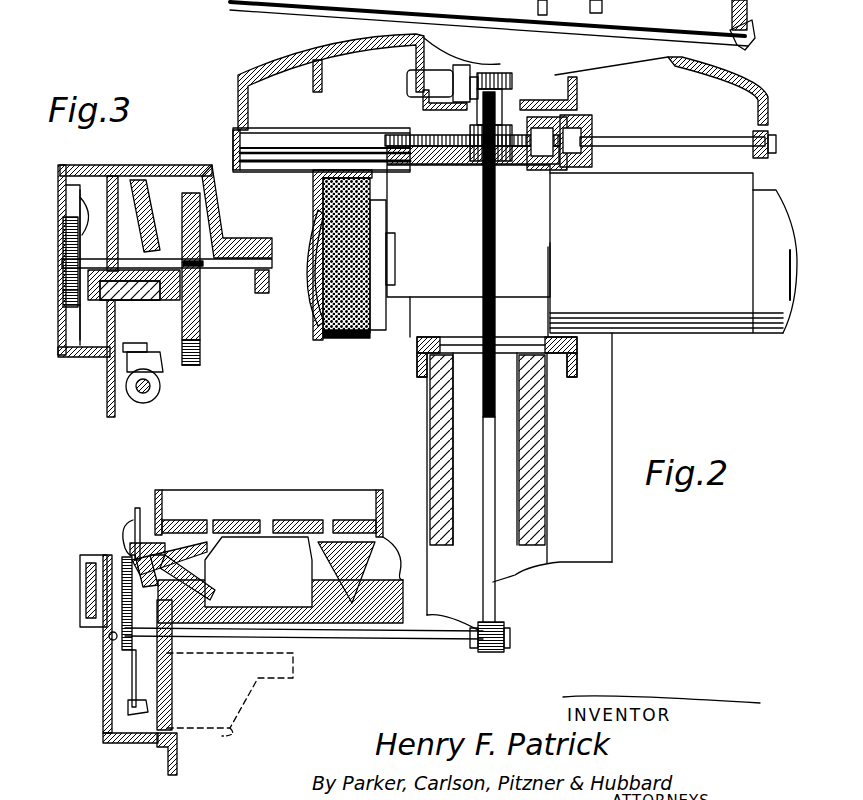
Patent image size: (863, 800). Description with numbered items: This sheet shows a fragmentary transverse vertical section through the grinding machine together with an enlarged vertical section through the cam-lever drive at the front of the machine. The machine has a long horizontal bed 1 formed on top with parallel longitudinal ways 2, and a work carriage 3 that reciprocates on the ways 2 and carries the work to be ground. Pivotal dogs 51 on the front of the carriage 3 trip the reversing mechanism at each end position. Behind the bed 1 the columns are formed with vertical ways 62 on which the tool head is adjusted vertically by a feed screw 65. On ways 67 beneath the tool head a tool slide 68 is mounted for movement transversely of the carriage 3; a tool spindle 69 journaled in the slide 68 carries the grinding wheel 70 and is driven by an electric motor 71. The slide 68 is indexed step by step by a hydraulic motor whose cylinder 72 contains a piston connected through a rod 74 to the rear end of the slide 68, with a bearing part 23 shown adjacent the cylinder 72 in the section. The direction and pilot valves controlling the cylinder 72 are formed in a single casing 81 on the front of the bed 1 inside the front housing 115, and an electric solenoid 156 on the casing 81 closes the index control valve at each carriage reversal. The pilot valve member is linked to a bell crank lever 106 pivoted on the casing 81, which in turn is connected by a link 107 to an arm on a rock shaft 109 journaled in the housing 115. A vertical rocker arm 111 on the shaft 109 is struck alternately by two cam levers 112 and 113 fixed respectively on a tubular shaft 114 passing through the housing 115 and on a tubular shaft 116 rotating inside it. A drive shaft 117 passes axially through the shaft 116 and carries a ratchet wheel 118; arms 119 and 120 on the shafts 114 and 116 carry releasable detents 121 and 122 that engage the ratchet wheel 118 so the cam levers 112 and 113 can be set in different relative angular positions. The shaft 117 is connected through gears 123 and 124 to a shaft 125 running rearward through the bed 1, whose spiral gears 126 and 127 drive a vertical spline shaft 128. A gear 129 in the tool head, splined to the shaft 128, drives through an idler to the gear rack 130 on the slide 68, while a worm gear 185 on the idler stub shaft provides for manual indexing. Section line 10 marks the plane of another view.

In FIG. 2, the bed 1 is at (168, 765).
In FIG. 2, the ways 2 is at (213, 583).
In FIG. 2, the work carriage 3 is at (293, 523).
In FIG. 2, the section line 10 is at (347, 62).
In FIG. 2, the bearing block 23 is at (546, 130).
In FIG. 2, the pivotal dogs 51 is at (133, 540).
In FIG. 2, the vertical way 62 is at (544, 423).
In FIG. 2, the feed screw 65 is at (470, 80).
In FIG. 2, the ways 67 is at (279, 163).
In FIG. 2, the tool slide 68 is at (645, 188).
In FIG. 2, the tool spindle 69 is at (390, 257).
In FIG. 2, the grinding wheel 70 is at (336, 338).
In FIG. 2, the electric motor 71 is at (786, 325).
In FIG. 2, the cylinder 72 is at (576, 117).
In FIG. 2, the rod 74 is at (634, 138).
In FIG. 2, the casing 81 is at (222, 732).
In FIG. 2, the bell crank lever 106 is at (150, 708).
In FIG. 2, the link 107 is at (133, 672).
In FIG. 3, the rock shaft 109 is at (160, 388).
In FIG. 3, the rocker arm 111 is at (125, 366).
In FIG. 2, the rocker arm 111 is at (110, 637).
In FIG. 3, the cam lever 112 is at (148, 182).
In FIG. 2, the cam lever 112 is at (114, 560).
In FIG. 3, the cam lever 113 is at (196, 321).
In FIG. 2, the cam lever 113 is at (100, 613).
In FIG. 3, the tubular shaft 114 is at (101, 232).
In FIG. 3, the front housing 115 is at (110, 402).
In FIG. 2, the front housing 115 is at (105, 703).
In FIG. 3, the tubular shaft 116 is at (132, 283).
In FIG. 3, the drive shaft 117 is at (230, 266).
In FIG. 3, the ratchet wheel 118 is at (68, 290).
In FIG. 2, the ratchet wheel 118 is at (87, 583).
In FIG. 3, the arm 119 is at (84, 205).
In FIG. 3, the arm 120 is at (80, 317).
In FIG. 3, the releasable detent 121 is at (64, 220).
In FIG. 3, the releasable detent 122 is at (83, 303).
In FIG. 3, the gear 123 is at (197, 332).
In FIG. 3, the gear 124 is at (200, 358).
In FIG. 2, the gear 124 is at (122, 652).
In FIG. 2, the shaft 125 is at (234, 640).
In FIG. 2, the spiral gear 126 is at (503, 632).
In FIG. 2, the spiral gear 127 is at (490, 652).
In FIG. 2, the spline shaft 128 is at (496, 582).
In FIG. 2, the gear 129 is at (490, 168).
In FIG. 2, the gear rack 130 is at (417, 130).
In FIG. 2, the electric solenoid 156 is at (290, 683).
In FIG. 2, the worm gear 185 is at (515, 82).